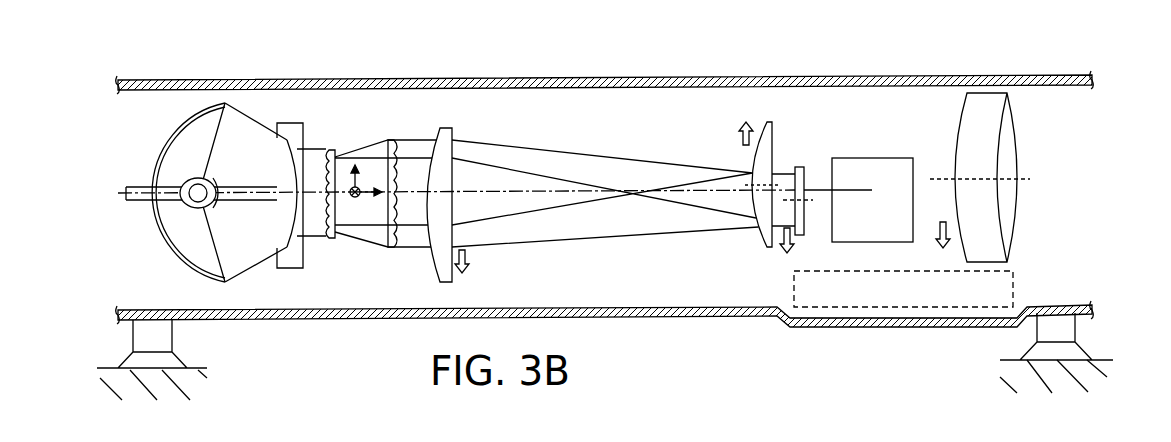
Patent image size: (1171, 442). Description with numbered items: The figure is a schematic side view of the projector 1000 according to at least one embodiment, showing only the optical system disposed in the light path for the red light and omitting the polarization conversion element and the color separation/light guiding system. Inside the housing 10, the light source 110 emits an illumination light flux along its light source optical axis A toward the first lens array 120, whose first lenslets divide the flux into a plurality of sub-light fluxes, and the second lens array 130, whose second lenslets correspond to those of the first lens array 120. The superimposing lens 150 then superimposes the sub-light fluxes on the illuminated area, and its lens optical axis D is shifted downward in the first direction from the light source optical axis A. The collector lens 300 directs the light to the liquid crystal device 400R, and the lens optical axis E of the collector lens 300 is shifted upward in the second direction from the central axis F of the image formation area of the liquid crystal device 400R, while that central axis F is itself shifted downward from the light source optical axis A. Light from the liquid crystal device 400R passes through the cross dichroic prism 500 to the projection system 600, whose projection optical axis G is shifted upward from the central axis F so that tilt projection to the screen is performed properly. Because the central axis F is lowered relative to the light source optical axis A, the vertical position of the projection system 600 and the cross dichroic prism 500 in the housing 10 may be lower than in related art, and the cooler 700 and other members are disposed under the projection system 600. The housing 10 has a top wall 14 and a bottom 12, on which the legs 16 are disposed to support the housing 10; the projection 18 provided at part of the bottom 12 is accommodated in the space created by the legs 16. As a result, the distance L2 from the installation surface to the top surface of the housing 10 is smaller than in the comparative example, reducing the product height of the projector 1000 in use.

The projector 1000 is at (1088, 38).
The housing 10 is at (916, 71).
The bottom of the housing 12 is at (635, 318).
The top wall of housing 14 is at (620, 78).
The legs 16 is at (173, 332).
The projection 18 is at (903, 326).
The light source 110 is at (184, 119).
The first lens array 120 is at (332, 148).
The second lens array 130 is at (393, 140).
The superimposing lens 150 is at (447, 128).
The collector lens 300 is at (762, 248).
The liquid crystal device 400R is at (800, 167).
The cross dichroic prism 500 is at (872, 158).
The projection system 600 is at (1013, 132).
The cooler 700 is at (1017, 287).
The light source optical axis A is at (289, 190).
The lens optical axis of the superimposing lens D is at (418, 203).
The lens optical axis of the collector lens E is at (773, 170).
The central axis of the image formation area F is at (805, 201).
The projection optical axis G is at (943, 178).
The distance from installation surface to top surface of housing L2 is at (1137, 360).